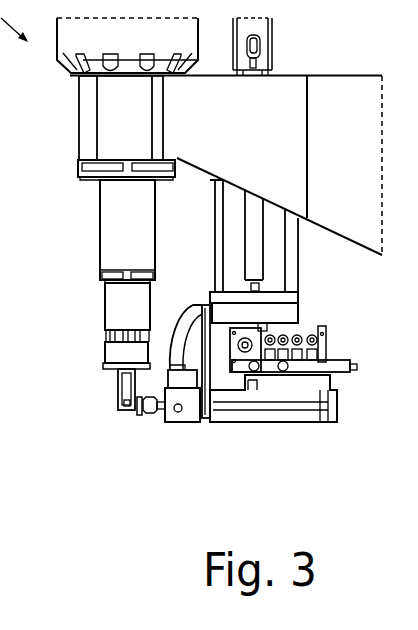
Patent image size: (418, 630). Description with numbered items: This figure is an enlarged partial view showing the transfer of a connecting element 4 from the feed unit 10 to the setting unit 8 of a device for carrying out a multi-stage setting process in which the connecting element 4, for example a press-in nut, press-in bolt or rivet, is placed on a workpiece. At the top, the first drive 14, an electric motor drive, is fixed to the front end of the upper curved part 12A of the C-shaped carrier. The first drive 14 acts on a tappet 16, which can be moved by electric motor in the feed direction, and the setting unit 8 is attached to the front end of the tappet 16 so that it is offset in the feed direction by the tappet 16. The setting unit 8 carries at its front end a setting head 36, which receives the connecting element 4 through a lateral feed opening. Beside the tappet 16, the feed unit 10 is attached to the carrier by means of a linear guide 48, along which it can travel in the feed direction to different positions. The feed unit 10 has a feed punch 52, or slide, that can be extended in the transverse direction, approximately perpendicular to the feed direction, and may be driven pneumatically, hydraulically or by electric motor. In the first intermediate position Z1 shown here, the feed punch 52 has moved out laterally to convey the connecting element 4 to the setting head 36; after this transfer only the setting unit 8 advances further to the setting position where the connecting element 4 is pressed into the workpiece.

The upper curved part 12A is at (332, 88).
The first drive 14 is at (66, 43).
The tappet 16 is at (108, 208).
The setting unit 8 is at (118, 303).
The setting head 36 is at (118, 384).
The connecting element 4 is at (137, 420).
The feed punch 52 is at (145, 418).
The linear guide 48 is at (297, 248).
The feed unit 10 is at (284, 415).
The first intermediate position Z1 is at (392, 405).